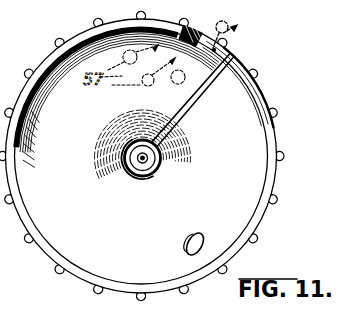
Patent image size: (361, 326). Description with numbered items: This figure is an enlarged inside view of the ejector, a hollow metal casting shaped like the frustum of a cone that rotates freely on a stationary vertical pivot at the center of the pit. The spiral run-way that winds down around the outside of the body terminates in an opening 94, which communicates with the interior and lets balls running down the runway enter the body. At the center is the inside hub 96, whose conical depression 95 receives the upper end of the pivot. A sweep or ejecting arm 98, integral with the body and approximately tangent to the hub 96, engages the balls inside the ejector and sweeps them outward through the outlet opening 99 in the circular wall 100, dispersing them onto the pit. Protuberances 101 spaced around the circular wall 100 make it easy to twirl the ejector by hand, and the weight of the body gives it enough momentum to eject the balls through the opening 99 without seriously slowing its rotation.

The opening 94 is at (187, 250).
The conical depression 95 is at (137, 170).
The inside hub 96 is at (161, 168).
The sweep or ejecting arm 98 is at (186, 104).
The outlet opening 99 is at (214, 48).
The circular wall 100 is at (18, 130).
The protuberances 101 is at (55, 50).